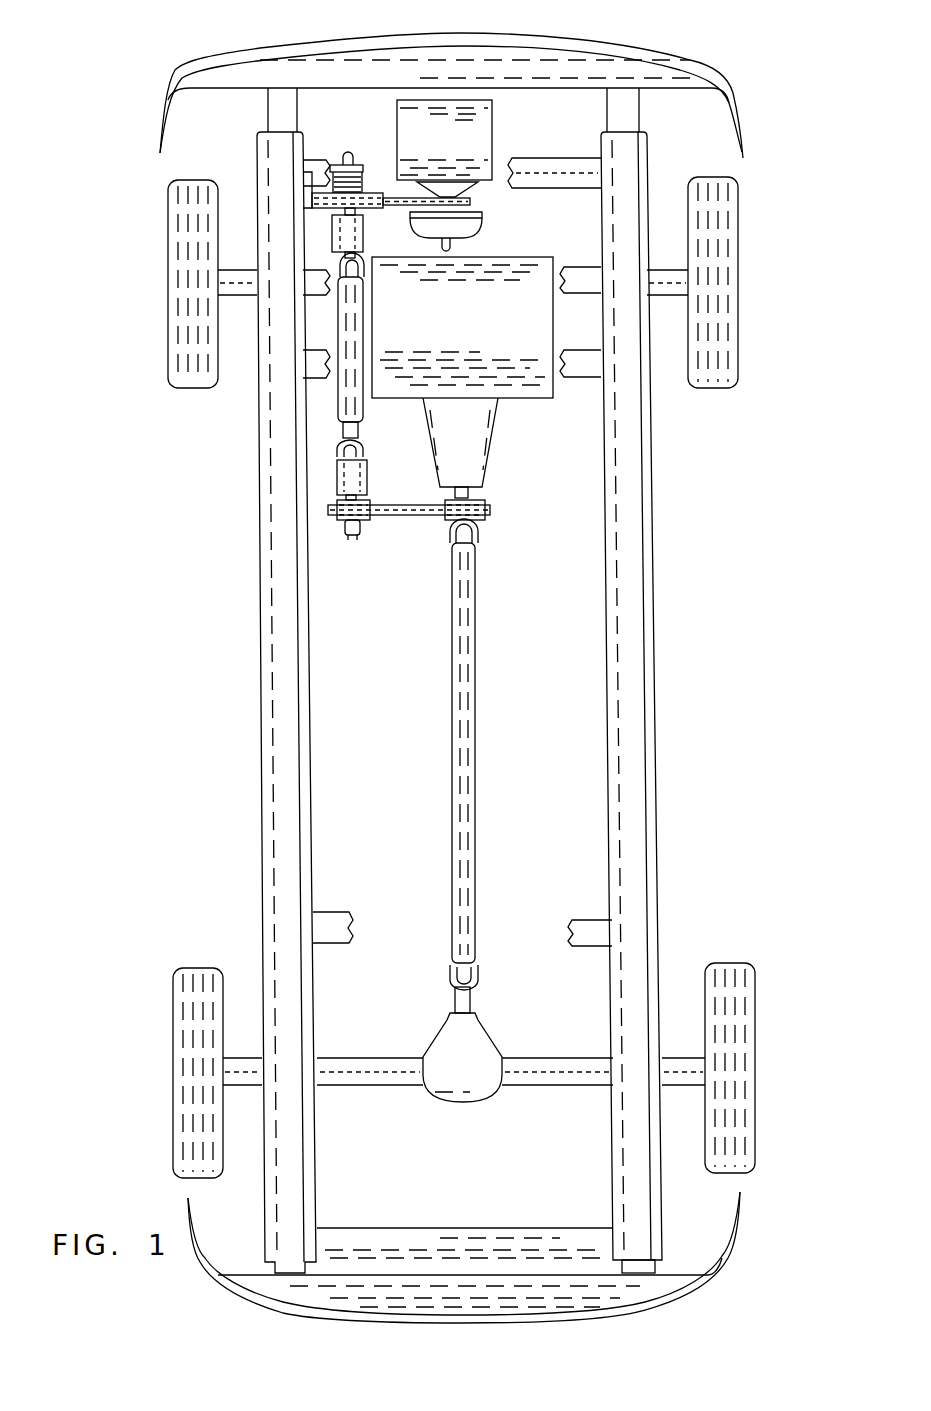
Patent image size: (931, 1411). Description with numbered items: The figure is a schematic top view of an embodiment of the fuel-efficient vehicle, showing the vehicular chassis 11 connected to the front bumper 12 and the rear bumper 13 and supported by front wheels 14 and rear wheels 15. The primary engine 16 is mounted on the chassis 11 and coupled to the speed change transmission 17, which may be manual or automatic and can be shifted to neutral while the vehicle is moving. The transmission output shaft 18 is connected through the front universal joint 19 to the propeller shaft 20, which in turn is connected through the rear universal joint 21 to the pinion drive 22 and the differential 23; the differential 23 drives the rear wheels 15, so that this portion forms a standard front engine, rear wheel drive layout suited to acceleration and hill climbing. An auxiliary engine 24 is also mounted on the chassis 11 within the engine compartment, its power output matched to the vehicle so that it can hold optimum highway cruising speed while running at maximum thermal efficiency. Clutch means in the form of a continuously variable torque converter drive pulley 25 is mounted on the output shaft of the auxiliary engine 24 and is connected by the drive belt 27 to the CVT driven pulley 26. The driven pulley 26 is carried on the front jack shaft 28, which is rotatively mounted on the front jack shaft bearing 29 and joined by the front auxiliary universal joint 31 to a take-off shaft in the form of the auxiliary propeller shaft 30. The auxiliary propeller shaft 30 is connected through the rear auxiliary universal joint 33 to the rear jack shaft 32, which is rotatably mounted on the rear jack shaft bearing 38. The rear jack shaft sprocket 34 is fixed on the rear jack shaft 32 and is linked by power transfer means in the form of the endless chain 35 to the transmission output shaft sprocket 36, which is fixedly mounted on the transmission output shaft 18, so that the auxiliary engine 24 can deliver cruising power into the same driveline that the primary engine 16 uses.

The vehicular chassis 11 is at (660, 640).
The front bumper 12 is at (447, 43).
The rear bumper 13 is at (708, 1274).
The front wheels 14 is at (168, 245).
The rear wheels 15 is at (173, 1028).
The primary engine 16 is at (480, 355).
The speed change transmission 17 is at (478, 450).
The transmission output shaft 18 is at (482, 497).
The front universal joint 19 is at (480, 532).
The propeller shaft 20 is at (474, 715).
The rear universal joint 21 is at (478, 968).
The pinion drive 22 is at (470, 1000).
The differential 23 is at (490, 1073).
The auxiliary engine 24 is at (456, 154).
The continuously variable torque converter drive pulley 25 is at (483, 220).
The CVT driven pulley 26 is at (380, 192).
The drive belt 27 is at (400, 205).
The front jack shaft 28 is at (345, 155).
The front jack shaft bearing 29 is at (330, 235).
The auxiliary propeller shaft 30 is at (347, 385).
The front auxiliary universal joint 31 is at (347, 260).
The rear jack shaft 32 is at (343, 530).
The rear auxiliary universal joint 33 is at (345, 445).
The rear jack shaft sprocket 34 is at (368, 520).
The endless chain 35 is at (402, 516).
The transmission output shaft sprocket 36 is at (443, 508).
The rear jack shaft bearing 38 is at (337, 480).